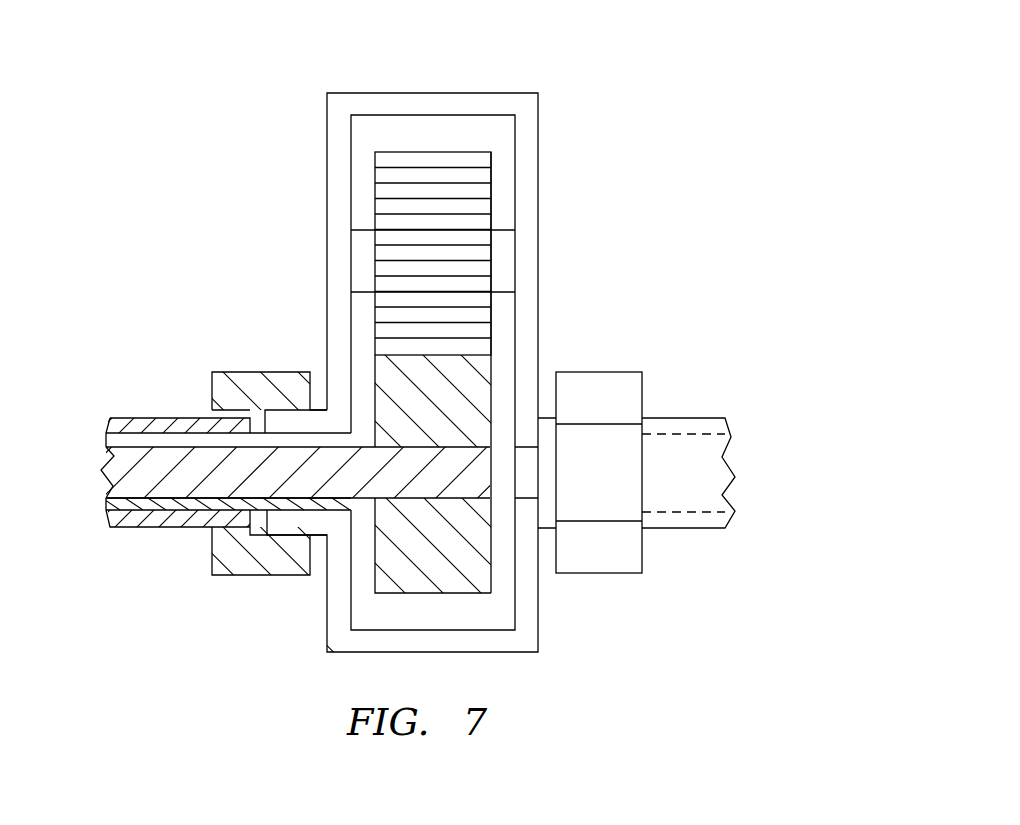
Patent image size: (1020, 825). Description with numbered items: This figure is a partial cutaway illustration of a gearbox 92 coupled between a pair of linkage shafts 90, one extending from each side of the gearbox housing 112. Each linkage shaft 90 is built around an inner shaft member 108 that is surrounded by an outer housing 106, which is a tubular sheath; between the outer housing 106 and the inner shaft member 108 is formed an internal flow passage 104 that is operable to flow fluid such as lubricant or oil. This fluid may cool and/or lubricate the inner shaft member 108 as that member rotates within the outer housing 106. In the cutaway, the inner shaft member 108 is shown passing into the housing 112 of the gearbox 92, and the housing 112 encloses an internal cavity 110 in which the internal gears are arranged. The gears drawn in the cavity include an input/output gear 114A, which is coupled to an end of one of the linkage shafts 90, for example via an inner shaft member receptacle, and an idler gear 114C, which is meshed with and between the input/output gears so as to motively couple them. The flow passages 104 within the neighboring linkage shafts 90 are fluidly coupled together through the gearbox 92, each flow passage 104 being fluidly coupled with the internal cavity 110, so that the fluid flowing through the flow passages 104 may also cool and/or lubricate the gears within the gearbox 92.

The linkage shaft 90 is at (177, 390).
The gearbox 92 is at (565, 77).
The flow passage 104 is at (164, 441).
The outer housing 106 is at (130, 528).
The inner shaft member 108 is at (117, 473).
The internal cavity 110 is at (503, 155).
The housing 112 is at (538, 167).
The input/output gear 114A is at (492, 374).
The idler gear 114C is at (375, 190).